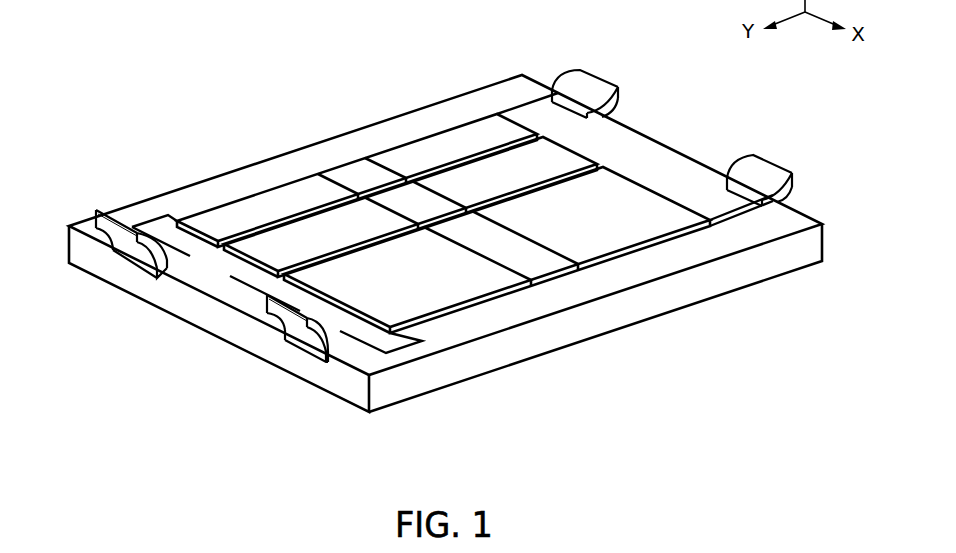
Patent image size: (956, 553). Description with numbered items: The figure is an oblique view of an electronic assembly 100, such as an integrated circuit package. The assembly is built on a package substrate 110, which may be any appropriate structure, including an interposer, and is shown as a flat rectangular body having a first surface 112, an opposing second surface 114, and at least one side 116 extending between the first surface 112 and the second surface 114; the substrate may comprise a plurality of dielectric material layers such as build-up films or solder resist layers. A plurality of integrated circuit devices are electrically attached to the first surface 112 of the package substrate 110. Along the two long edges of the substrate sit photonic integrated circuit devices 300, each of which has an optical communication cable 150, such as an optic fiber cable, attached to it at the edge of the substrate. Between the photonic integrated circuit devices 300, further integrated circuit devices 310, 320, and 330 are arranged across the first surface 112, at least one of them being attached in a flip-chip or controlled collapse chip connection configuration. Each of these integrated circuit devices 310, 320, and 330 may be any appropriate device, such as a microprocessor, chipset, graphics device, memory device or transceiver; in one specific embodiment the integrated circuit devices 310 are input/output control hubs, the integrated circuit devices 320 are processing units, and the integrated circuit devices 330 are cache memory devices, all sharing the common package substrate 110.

The electronic assembly 100 is at (175, 55).
The package substrate 110 is at (597, 318).
The first surface 112 is at (508, 97).
The second surface 114 is at (98, 283).
The side 116 is at (330, 383).
The optical communication cable 150 is at (583, 92).
The photonic integrated circuit device 300 is at (182, 245).
The integrated circuit device 310 is at (250, 213).
The integrated circuit device 320 is at (395, 255).
The integrated circuit device 330 is at (398, 255).